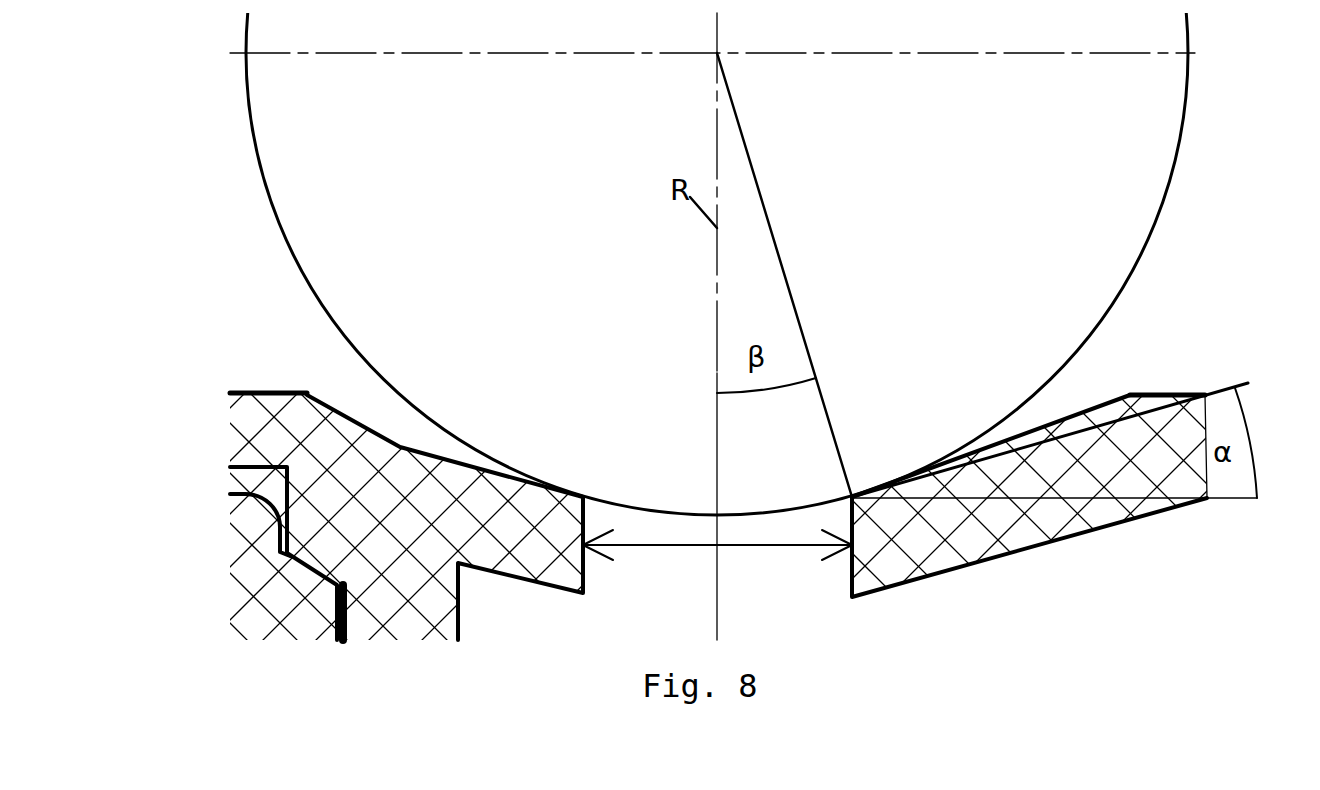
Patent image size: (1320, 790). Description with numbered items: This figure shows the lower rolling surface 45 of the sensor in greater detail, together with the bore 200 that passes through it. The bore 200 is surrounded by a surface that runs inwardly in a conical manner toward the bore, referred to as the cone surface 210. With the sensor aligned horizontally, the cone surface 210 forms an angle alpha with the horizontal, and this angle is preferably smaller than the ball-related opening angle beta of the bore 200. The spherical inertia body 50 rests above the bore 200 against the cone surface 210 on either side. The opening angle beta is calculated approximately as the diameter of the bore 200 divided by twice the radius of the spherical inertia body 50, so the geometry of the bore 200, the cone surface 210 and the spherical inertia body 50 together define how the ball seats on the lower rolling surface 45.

The spherical inertia body 50 is at (350, 183).
The cone surface 210 is at (480, 468).
The bore 200 is at (695, 532).
The lower rolling surface 45 is at (1023, 447).